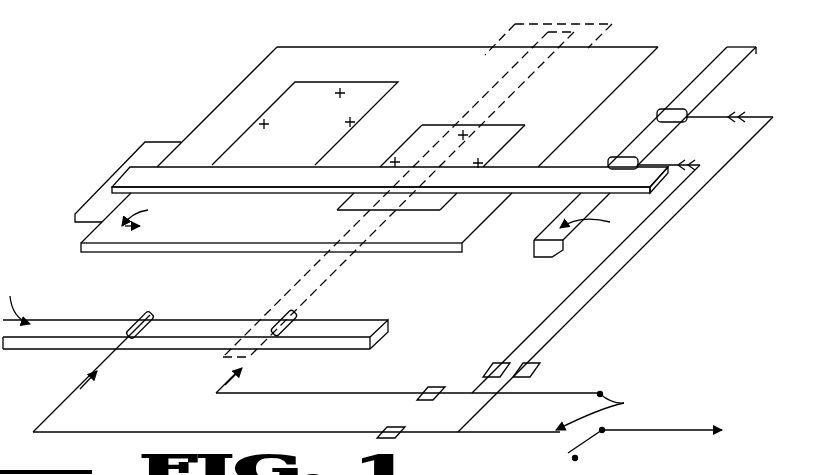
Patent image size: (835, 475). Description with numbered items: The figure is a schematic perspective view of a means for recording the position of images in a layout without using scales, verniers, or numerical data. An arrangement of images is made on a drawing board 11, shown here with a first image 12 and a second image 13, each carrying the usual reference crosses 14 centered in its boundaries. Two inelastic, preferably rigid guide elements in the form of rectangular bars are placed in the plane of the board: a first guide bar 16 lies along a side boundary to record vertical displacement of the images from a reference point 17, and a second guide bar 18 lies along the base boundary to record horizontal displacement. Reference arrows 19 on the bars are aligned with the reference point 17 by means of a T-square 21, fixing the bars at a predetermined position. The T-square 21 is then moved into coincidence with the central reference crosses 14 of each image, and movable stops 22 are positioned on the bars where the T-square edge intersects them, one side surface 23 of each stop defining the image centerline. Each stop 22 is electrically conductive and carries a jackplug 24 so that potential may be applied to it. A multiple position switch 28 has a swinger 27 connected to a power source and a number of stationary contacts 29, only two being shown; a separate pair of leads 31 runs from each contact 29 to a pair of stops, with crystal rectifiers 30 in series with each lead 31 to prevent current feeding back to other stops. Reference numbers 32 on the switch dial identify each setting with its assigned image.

The drawing board 11 is at (456, 72).
The first image 12 is at (269, 159).
The second image 13 is at (435, 205).
The reference crosses 14 is at (342, 92).
The first guide element 16 is at (741, 22).
The reference point 17 is at (145, 213).
The second guide element 18 is at (358, 328).
The reference arrows 19 is at (320, 269).
The T-square 21 is at (94, 196).
The movable stops 22 is at (671, 109).
The side surface 23 is at (657, 117).
The jackplug 24 is at (728, 122).
The swinger 27 is at (590, 440).
The multiple position switch 28 is at (628, 417).
The stationary contacts 29 is at (601, 411).
The crystal rectifiers 30 is at (527, 363).
The leads 31 is at (562, 302).
The reference number 32 is at (611, 388).